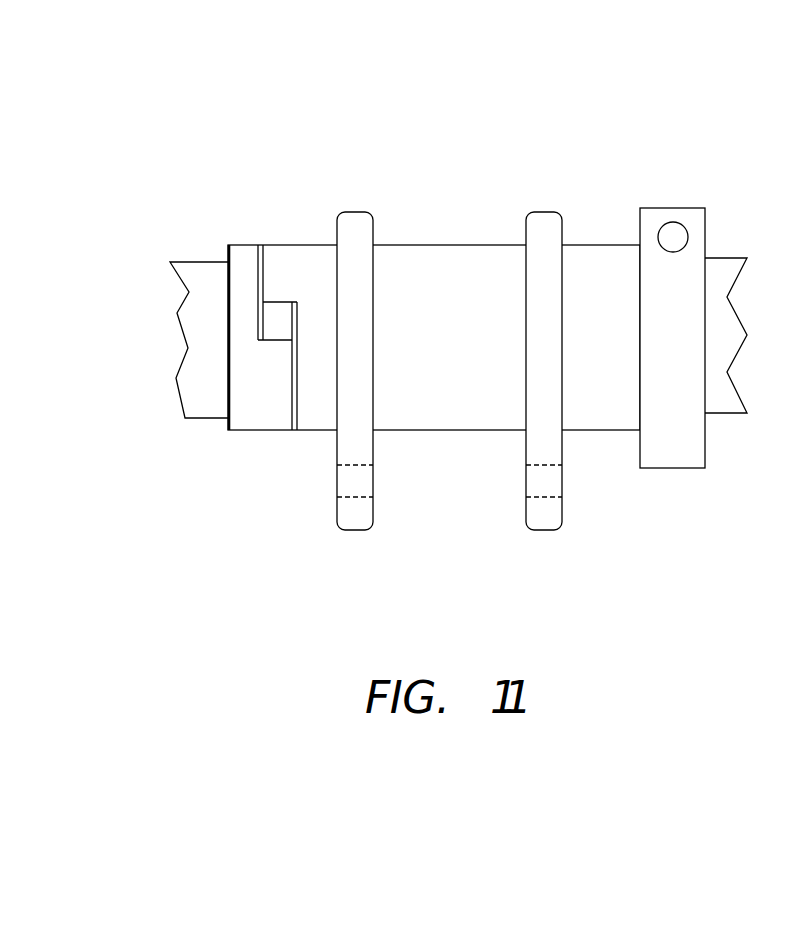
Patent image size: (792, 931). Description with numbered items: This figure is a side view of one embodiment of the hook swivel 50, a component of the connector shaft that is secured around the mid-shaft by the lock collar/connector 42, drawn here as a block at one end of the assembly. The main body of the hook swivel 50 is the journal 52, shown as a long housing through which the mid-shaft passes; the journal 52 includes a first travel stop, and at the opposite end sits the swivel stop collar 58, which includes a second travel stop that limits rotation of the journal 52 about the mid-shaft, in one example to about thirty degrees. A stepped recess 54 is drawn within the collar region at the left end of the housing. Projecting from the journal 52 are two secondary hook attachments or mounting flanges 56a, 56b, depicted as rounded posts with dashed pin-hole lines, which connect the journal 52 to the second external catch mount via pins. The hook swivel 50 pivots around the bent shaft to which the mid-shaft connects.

The hook swivel 50 is at (427, 365).
The journal 52 is at (303, 243).
The notch / recess 54 is at (258, 323).
The swivel stop collar 58 is at (232, 432).
The secondary hook attachment/mounting flange 56a is at (353, 533).
The secondary hook attachment/mounting flange 56b is at (542, 533).
The lock collar/connector 42 is at (677, 208).